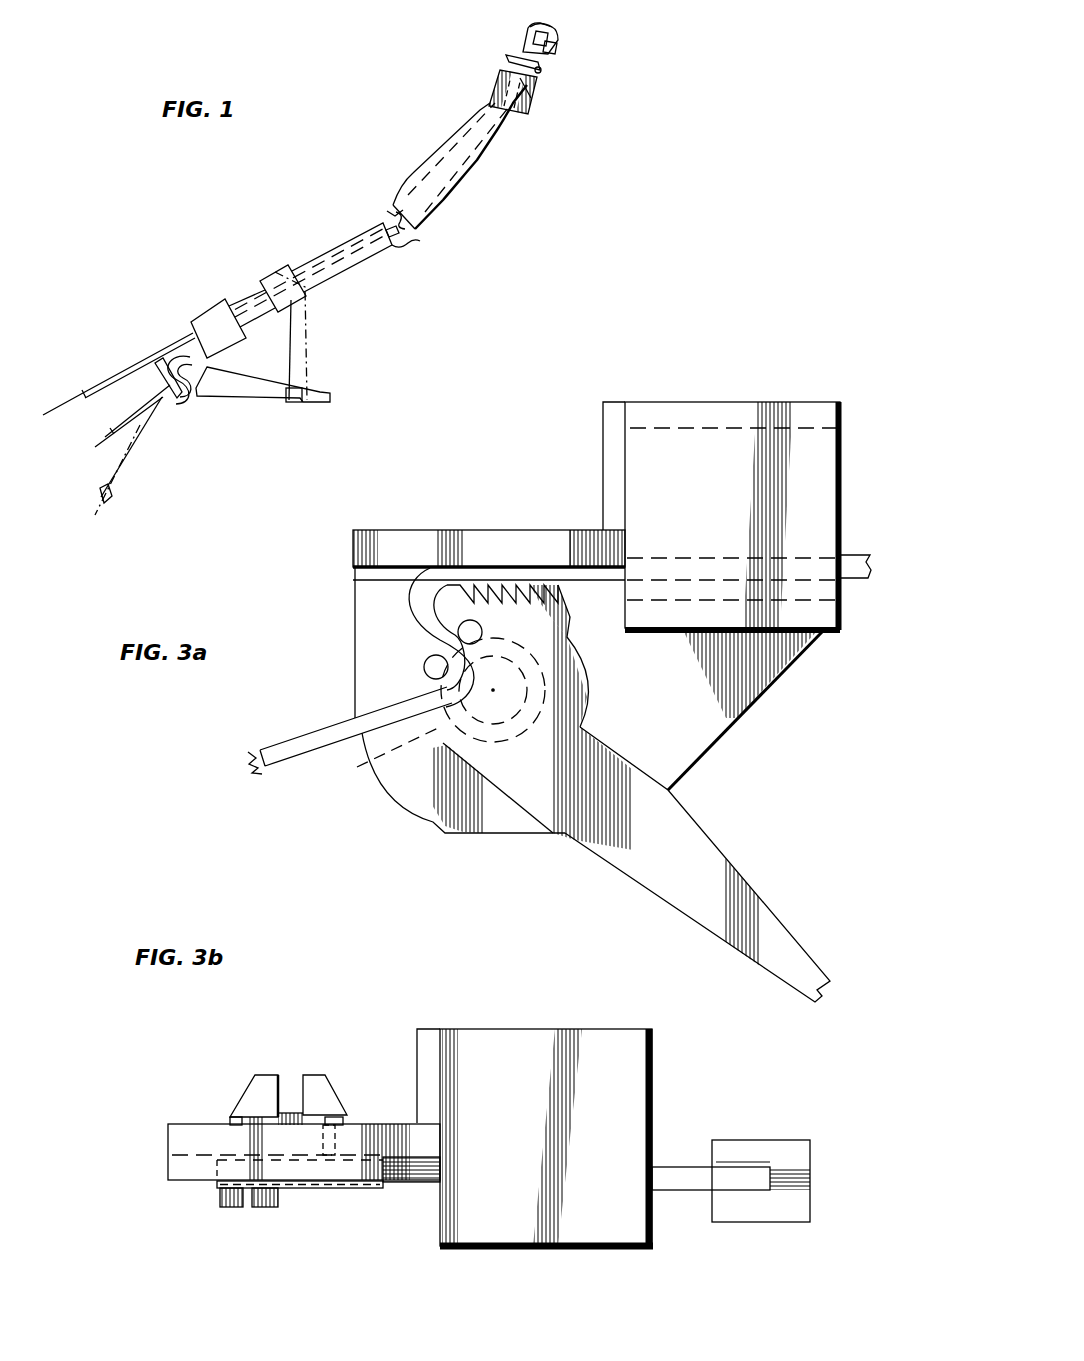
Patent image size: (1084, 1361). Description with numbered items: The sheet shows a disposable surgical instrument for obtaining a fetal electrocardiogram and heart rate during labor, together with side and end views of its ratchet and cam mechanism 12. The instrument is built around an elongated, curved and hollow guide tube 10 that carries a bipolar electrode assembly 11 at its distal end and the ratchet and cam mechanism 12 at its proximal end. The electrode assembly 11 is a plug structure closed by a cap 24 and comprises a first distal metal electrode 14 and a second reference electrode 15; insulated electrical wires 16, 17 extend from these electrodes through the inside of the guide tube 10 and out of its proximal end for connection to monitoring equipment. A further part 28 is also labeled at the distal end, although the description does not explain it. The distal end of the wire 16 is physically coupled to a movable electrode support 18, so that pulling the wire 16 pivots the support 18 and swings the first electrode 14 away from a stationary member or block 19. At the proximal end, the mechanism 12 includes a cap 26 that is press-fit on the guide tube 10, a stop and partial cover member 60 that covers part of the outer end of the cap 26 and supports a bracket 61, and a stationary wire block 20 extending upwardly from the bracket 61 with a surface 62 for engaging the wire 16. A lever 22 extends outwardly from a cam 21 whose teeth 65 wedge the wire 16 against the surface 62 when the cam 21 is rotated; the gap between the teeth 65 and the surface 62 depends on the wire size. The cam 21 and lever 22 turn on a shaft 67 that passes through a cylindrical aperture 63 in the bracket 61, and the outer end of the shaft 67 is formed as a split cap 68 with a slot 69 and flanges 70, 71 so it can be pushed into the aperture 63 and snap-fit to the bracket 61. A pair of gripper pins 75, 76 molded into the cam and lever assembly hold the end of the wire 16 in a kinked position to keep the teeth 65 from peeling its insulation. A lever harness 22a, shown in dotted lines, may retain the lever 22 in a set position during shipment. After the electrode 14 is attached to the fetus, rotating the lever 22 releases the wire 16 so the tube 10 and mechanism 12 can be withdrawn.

In FIG. 1, the guide tube 10 is at (348, 226).
In FIG. 1, the electrode assembly 11 is at (580, 41).
In FIG. 1, the ratchet and cam mechanism 12 is at (208, 292).
In FIG. 3a, the ratchet and cam mechanism 12 is at (657, 392).
In FIG. 3b, the ratchet and cam mechanism 12 is at (402, 1205).
In FIG. 1, the first distal metal electrode 14 is at (560, 32).
In FIG. 1, the second reference electrode 15 is at (492, 88).
In FIG. 1, the insulated electrical wire 16 is at (483, 158).
In FIG. 3a, the insulated electrical wire 16 is at (808, 556).
In FIG. 1, the insulated electrical wire 17 is at (460, 158).
In FIG. 1, the movable electrode support 18 is at (556, 46).
In FIG. 1, the stationary member or block 19 is at (546, 24).
In FIG. 1, the stationary wire block 20 is at (170, 355).
In FIG. 3a, the stationary wire block 20 is at (435, 530).
In FIG. 3b, the stationary wire block 20 is at (185, 1168).
In FIG. 1, the cam 21 is at (182, 402).
In FIG. 3a, the cam 21 is at (472, 588).
In FIG. 3b, the cam 21 is at (300, 1190).
In FIG. 1, the lever 22 is at (238, 386).
In FIG. 3a, the lever 22 is at (730, 870).
In FIG. 3b, the lever 22 is at (400, 1185).
In FIG. 1, the lever harness 22a is at (308, 375).
In FIG. 1, the cap 24 is at (541, 72).
In FIG. 1, the cap 26 is at (266, 300).
In FIG. 3a, the cap 26 is at (802, 402).
In FIG. 3b, the cap 26 is at (530, 1028).
In FIG. 1, the sleeve 28 is at (531, 100).
In FIG. 3a, the stop and partial cover member 60 is at (604, 411).
In FIG. 3b, the stop and partial cover member 60 is at (420, 1028).
In FIG. 3a, the bracket 61 is at (355, 683).
In FIG. 3a, the surface 62 is at (354, 567).
In FIG. 3a, the cylindrical aperture 63 is at (375, 765).
In FIG. 3a, the teeth 65 is at (518, 584).
In FIG. 3a, the shaft 67 is at (575, 672).
In FIG. 3b, the split cap 68 is at (240, 1060).
In FIG. 3b, the slot 69 is at (297, 1082).
In FIG. 3b, the flange 70 is at (340, 1130).
In FIG. 3b, the flange 71 is at (235, 1140).
In FIG. 3a, the gripper pin 75 is at (425, 665).
In FIG. 3b, the gripper pin 75 is at (232, 1208).
In FIG. 3a, the gripper pin 76 is at (483, 630).
In FIG. 3b, the gripper pin 76 is at (265, 1210).